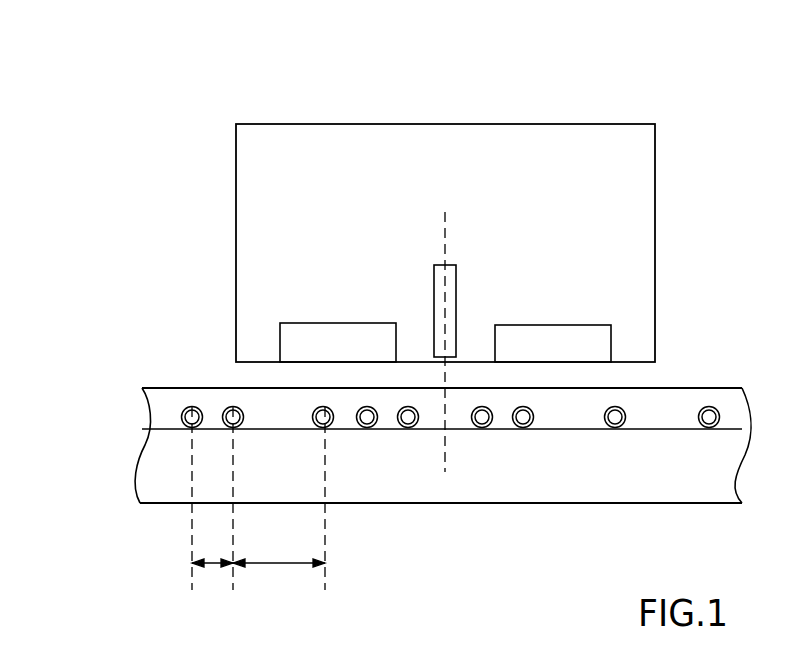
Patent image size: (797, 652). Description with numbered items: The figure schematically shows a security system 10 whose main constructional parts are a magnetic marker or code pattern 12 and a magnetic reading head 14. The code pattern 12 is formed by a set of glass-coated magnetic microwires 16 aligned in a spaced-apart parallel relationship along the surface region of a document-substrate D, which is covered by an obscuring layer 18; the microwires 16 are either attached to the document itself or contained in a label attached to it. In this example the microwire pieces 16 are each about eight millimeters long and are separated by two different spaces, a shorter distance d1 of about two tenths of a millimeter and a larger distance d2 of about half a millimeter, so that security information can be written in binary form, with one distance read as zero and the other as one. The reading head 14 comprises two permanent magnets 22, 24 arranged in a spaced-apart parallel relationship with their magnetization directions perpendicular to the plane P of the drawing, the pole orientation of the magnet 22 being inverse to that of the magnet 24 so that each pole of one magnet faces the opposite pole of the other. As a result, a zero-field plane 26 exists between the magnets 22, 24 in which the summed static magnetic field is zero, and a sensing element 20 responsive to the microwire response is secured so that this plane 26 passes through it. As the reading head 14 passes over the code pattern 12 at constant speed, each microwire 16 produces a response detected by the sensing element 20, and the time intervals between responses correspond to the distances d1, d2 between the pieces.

The security system 10 is at (247, 109).
The magnetic marker or code pattern 12 is at (273, 407).
The magnetic reading head 14 is at (675, 155).
The glass-coated magnetic microwires 16 is at (489, 423).
The obscuring layer 18 is at (676, 390).
The sensing element 20 is at (456, 290).
The permanent magnet 22 is at (280, 343).
The permanent magnet 24 is at (611, 343).
The zero-field plane 26 is at (445, 228).
The plane P is at (777, 195).
The document-substrate D is at (663, 495).
The shorter distance between microwire pieces d1 is at (212, 498).
The larger distance between microwire pieces d2 is at (279, 498).